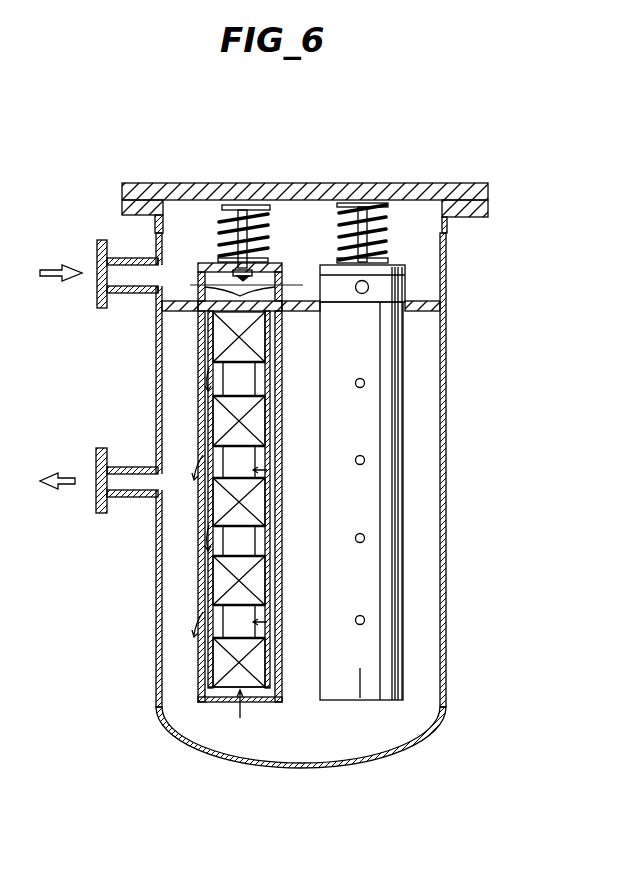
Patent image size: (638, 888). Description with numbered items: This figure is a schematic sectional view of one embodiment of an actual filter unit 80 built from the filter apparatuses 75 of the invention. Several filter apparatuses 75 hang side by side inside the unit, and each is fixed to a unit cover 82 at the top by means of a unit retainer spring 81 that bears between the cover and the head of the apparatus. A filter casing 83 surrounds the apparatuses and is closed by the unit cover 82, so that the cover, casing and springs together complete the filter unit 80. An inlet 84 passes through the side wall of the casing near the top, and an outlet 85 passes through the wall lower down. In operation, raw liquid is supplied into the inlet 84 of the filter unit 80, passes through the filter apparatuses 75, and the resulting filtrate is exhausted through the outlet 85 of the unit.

The filter apparatus 75 is at (392, 497).
The filter unit 80 is at (446, 369).
The unit retainer spring 81 is at (286, 185).
The unit cover 82 is at (412, 185).
The filter casing 83 is at (444, 638).
The inlet 84 is at (96, 276).
The outlet 85 is at (96, 484).